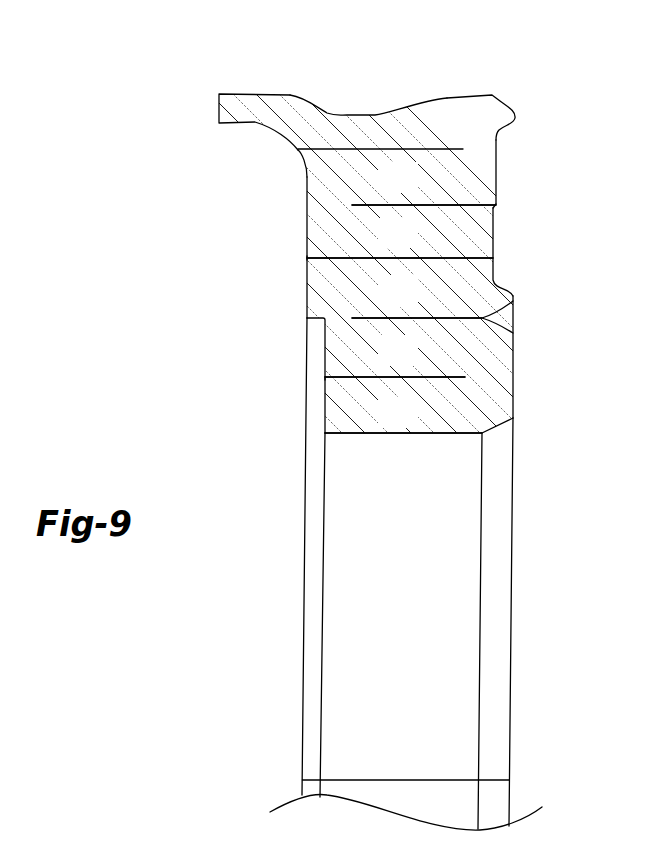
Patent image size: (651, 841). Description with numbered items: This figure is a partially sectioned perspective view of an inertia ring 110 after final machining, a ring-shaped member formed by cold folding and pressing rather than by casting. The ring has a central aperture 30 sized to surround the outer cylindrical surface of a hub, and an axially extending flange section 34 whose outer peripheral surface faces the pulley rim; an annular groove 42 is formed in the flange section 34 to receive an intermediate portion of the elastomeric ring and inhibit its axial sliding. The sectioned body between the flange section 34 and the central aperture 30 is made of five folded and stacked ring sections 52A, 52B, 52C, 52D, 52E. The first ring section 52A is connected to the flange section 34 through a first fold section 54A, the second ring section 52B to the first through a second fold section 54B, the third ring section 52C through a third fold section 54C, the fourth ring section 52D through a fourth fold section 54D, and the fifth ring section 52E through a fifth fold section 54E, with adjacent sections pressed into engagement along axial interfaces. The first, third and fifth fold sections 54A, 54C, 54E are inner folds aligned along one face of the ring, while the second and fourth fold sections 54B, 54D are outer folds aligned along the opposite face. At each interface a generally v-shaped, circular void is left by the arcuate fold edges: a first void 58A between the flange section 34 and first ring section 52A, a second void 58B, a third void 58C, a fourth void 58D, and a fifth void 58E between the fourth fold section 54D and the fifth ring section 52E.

The inertia ring 110 is at (166, 221).
The annular groove 42 is at (345, 113).
The flange section 34 is at (455, 97).
The central aperture 30 is at (352, 435).
The first ring section 52A is at (411, 188).
The second ring section 52B is at (411, 243).
The third ring section 52C is at (411, 303).
The fourth ring section 52D is at (411, 361).
The fifth ring section 52E is at (411, 423).
The first fold section 54A is at (480, 163).
The second fold section 54B is at (323, 212).
The third fold section 54C is at (494, 251).
The fourth fold section 54D is at (330, 312).
The fifth fold section 54E is at (490, 380).
The first void 58A is at (298, 150).
The second void 58B is at (490, 206).
The third void 58C is at (307, 258).
The fourth void 58D is at (483, 318).
The fifth void 58E is at (325, 378).